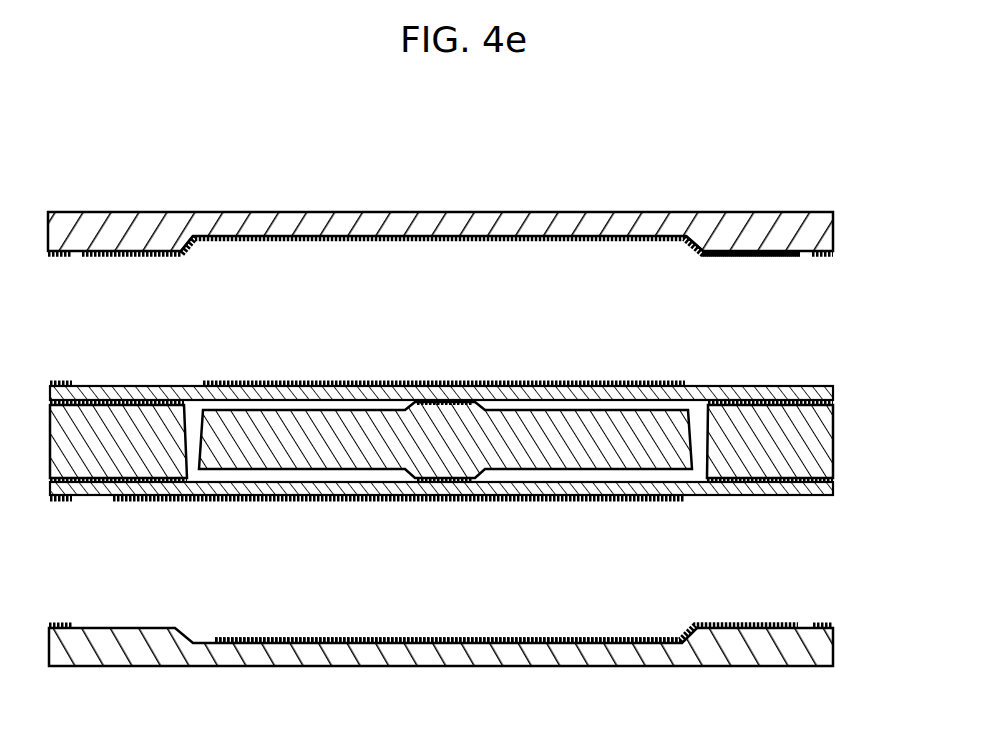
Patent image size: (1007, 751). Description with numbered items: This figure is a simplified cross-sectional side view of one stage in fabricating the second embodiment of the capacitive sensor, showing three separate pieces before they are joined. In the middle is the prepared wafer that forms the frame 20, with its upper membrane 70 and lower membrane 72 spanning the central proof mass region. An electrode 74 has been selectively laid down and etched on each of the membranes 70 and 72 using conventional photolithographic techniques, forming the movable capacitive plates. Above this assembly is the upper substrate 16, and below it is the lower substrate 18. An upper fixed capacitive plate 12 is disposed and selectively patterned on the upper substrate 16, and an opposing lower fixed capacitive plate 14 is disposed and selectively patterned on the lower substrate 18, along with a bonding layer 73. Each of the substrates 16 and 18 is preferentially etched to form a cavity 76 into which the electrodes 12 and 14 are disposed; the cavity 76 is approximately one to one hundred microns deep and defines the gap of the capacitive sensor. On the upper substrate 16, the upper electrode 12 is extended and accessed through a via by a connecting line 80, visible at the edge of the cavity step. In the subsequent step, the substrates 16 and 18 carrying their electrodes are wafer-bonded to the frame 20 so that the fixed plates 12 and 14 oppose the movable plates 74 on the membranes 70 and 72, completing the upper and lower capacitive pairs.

The upper fixed capacitive plate 12 is at (265, 242).
The lower fixed capacitive plate 14 is at (250, 637).
The upper substrate 16 is at (682, 218).
The lower substrate 18 is at (731, 650).
The frame 20 is at (484, 443).
The upper membrane 70 is at (697, 384).
The lower membrane 72 is at (695, 497).
The bonding layer 73 is at (752, 252).
The electrode 74 is at (345, 380).
The cavity 76 is at (683, 238).
The connecting line 80 is at (193, 236).